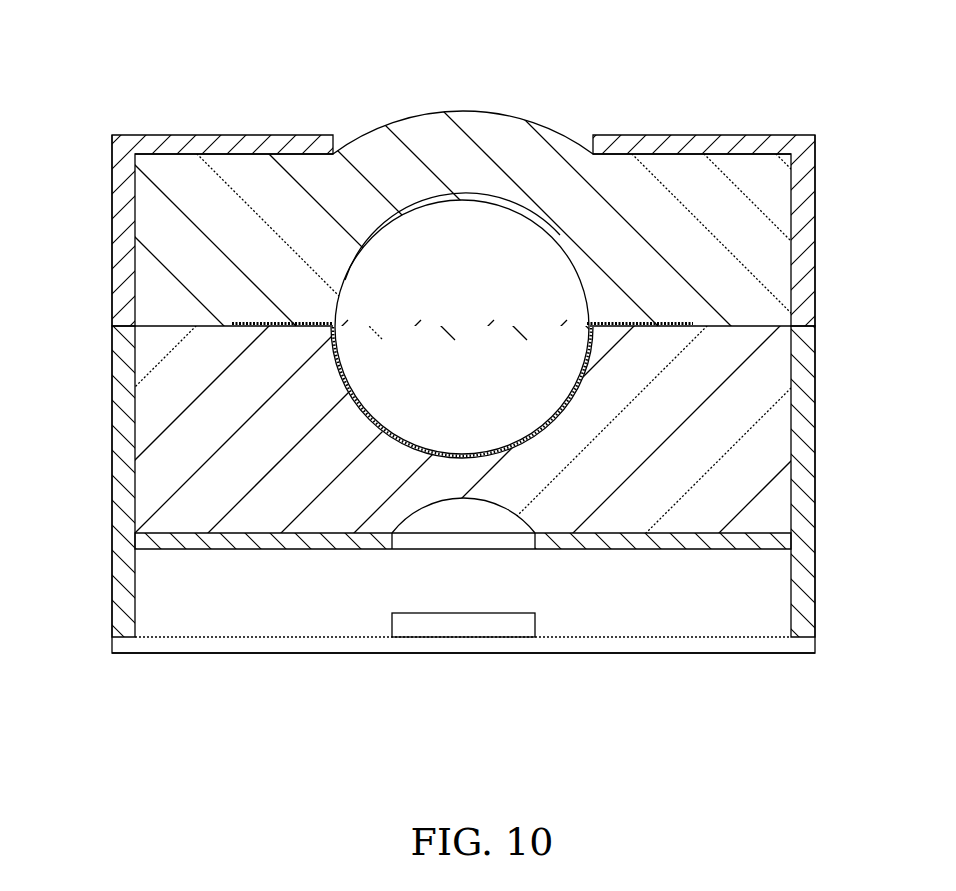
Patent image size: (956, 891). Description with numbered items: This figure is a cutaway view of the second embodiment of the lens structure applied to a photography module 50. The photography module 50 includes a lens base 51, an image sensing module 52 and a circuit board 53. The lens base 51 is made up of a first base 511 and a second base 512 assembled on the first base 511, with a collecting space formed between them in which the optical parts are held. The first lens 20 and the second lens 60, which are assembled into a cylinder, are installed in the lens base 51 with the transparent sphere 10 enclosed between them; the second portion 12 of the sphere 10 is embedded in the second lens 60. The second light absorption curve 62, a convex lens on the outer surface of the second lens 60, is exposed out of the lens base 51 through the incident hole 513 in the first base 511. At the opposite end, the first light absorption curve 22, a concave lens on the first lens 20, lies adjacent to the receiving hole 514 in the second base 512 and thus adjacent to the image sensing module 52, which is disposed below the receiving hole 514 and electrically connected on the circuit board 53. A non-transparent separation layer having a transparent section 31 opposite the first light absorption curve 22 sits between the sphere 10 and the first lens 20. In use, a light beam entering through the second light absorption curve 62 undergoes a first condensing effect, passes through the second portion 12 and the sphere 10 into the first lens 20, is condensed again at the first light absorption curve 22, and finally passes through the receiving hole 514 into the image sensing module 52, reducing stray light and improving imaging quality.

The sphere 10 is at (465, 245).
The second portion 12 is at (420, 206).
The first lens 20 is at (778, 435).
The first light absorption curve 22 is at (404, 517).
The transparent section 31 is at (520, 448).
The photography module 50 is at (113, 654).
The lens base 51 is at (148, 135).
The first base 511 is at (122, 177).
The second base 512 is at (113, 578).
The incident hole 513 is at (333, 152).
The receiving hole 514 is at (414, 540).
The image sensing module 52 is at (484, 630).
The circuit board 53 is at (711, 654).
The second lens 60 is at (778, 260).
The second light absorption curve 62 is at (508, 113).